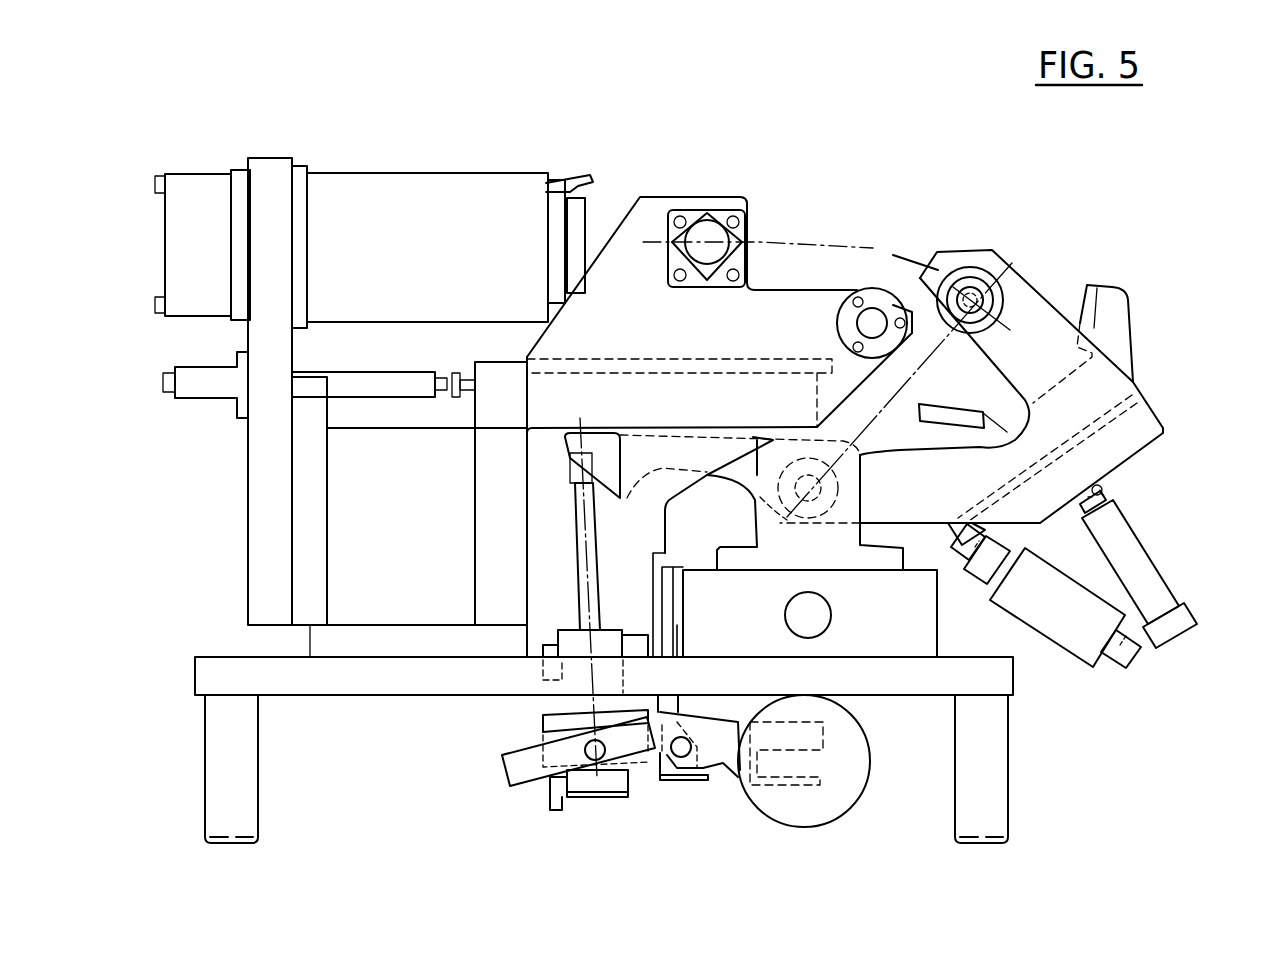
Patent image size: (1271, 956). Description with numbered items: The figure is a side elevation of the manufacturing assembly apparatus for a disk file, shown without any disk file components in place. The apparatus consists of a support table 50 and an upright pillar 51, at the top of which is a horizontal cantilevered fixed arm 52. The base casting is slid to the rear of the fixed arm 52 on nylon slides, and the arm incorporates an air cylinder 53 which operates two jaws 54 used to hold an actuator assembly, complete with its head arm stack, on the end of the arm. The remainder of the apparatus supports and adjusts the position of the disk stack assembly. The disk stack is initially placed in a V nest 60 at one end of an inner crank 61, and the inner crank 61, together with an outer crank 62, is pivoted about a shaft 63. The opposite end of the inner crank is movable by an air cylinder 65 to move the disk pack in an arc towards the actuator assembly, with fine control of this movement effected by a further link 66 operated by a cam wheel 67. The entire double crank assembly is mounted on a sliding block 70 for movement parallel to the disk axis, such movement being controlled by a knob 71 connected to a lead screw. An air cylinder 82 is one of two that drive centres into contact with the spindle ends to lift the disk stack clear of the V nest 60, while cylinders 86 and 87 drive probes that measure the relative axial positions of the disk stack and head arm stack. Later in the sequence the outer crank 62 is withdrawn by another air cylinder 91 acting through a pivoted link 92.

The support table 50 is at (1008, 783).
The upright pillar 51 is at (248, 505).
The horizontal cantilevered fixed arm 52 is at (440, 173).
The air cylinder 53 is at (165, 244).
The jaws 54 is at (606, 135).
The V nest 60 is at (1097, 287).
The inner crank 61 is at (1093, 423).
The outer crank 62 is at (1037, 283).
The shaft 63 is at (818, 495).
The air cylinder 65 is at (608, 797).
The link 66 is at (738, 777).
The cam wheel 67 is at (810, 827).
The sliding block 70 is at (757, 540).
The knob 71 is at (785, 615).
The air cylinder 82 is at (975, 267).
The cylinder 86 is at (877, 300).
The cylinder 87 is at (705, 210).
The air cylinder 91 is at (1098, 668).
The pivoted link 92 is at (1167, 572).